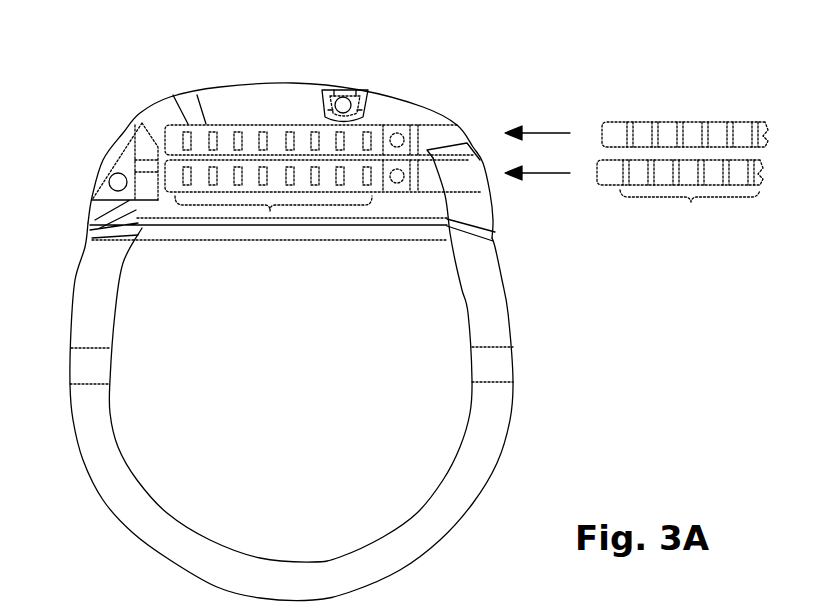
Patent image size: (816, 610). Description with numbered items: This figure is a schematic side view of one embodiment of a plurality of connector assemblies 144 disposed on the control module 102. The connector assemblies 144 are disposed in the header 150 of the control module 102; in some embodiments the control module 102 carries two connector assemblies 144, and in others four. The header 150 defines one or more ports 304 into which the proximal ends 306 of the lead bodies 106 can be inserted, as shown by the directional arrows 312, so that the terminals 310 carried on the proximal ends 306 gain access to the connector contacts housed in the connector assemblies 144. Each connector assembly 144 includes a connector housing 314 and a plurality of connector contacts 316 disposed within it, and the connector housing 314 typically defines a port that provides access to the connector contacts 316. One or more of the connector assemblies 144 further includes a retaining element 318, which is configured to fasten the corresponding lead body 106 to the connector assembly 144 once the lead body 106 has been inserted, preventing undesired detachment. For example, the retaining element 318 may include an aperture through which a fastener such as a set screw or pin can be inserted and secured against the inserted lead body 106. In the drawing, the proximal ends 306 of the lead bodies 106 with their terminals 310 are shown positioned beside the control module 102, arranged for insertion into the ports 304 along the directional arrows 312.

The control module 102 is at (106, 100).
The header 150 is at (267, 88).
The connector housing 314 is at (188, 124).
The connector assembly 144 is at (377, 125).
The retaining element 318 is at (405, 127).
The connector contacts 316 is at (270, 211).
The port 304 is at (481, 127).
The directional arrows 312 is at (540, 133).
The proximal end 306 is at (666, 105).
The lead body 106 is at (715, 122).
The terminals 310 is at (690, 208).